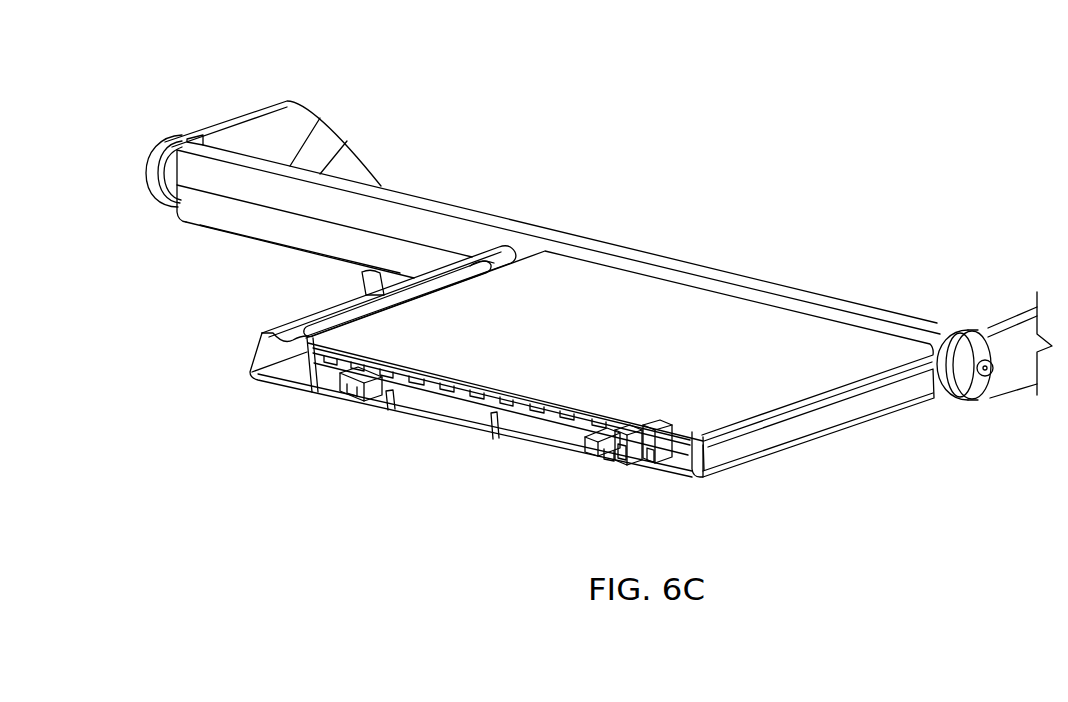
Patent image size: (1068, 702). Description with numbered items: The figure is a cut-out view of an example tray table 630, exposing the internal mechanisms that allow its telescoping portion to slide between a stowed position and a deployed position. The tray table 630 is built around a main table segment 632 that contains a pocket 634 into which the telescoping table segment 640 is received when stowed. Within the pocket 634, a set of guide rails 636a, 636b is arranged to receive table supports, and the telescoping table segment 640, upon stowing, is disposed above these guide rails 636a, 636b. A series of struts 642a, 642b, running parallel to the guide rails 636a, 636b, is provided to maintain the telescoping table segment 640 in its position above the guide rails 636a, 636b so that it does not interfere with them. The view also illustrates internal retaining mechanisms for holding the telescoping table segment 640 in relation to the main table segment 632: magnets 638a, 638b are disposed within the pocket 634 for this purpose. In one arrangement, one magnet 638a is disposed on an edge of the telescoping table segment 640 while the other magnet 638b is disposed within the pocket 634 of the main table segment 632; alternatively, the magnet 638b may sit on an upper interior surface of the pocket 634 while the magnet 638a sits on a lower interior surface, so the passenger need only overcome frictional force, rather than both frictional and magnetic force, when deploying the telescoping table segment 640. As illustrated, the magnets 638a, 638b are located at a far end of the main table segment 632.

The mounting assembly 630 is at (186, 100).
The main table segment 632 is at (598, 329).
The pocket 634 is at (424, 445).
The guide rail 636a is at (348, 392).
The guide rail 636b is at (608, 456).
The magnet 638a is at (624, 464).
The magnet 638b is at (662, 457).
The telescoping table segment 640 is at (266, 338).
The strut 642a is at (388, 404).
The strut 642b is at (495, 425).